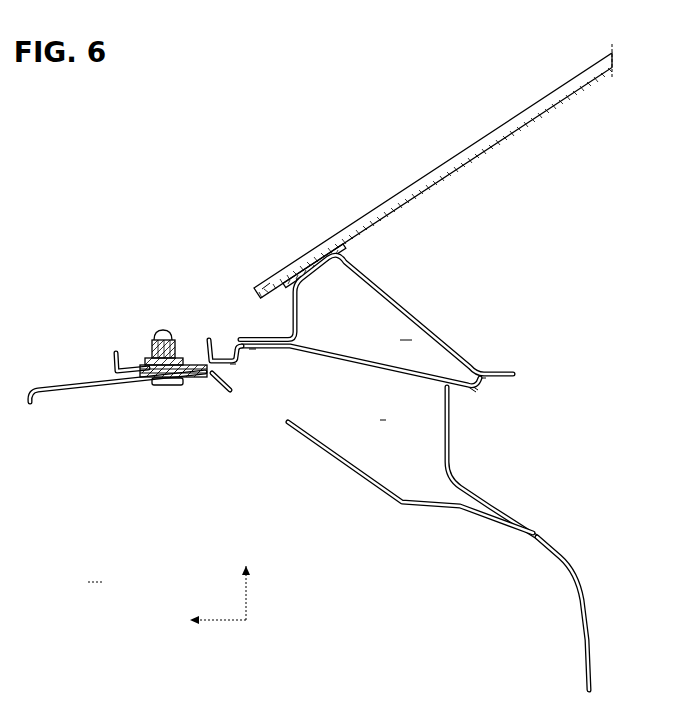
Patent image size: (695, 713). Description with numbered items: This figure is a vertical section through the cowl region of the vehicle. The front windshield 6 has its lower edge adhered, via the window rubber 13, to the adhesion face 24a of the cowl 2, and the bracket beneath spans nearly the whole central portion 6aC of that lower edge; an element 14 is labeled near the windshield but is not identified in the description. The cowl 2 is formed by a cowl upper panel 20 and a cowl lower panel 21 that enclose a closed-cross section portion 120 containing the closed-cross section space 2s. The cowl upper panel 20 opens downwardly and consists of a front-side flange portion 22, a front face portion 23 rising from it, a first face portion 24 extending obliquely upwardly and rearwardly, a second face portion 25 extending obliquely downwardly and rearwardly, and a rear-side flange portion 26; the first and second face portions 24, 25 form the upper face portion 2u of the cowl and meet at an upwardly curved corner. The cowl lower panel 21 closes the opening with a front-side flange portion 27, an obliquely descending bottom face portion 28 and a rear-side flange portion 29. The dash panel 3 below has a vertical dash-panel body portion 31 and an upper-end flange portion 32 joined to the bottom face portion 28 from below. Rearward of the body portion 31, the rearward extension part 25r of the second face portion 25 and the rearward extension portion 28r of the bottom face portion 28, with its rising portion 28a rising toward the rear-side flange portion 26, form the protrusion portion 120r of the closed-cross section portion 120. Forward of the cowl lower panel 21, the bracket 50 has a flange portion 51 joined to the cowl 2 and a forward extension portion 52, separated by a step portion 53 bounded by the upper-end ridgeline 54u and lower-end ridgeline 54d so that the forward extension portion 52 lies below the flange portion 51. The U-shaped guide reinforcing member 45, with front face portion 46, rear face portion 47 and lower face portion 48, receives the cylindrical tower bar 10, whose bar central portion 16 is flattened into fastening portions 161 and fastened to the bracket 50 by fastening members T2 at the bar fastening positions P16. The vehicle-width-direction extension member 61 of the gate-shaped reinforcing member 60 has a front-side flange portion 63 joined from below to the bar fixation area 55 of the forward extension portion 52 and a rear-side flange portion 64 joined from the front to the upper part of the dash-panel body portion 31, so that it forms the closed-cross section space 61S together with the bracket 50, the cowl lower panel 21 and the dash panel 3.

The windshield 14 is at (570, 80).
The front windshield 6 is at (486, 126).
The central portion of the windshield lower edge 6aC is at (368, 188).
The window rubber 13 is at (352, 240).
The front-side flange portion 22 is at (268, 283).
The front face portion 23 is at (298, 278).
The cowl 2 is at (405, 264).
The cowl upper panel 20 is at (421, 330).
The upper face portion 2u is at (450, 330).
The first face portion 24 is at (402, 347).
The adhesion face 24a is at (333, 272).
The second face portion 25 is at (370, 284).
The closed-cross section portion 120 is at (390, 304).
The rearward extension part 25r is at (472, 362).
The rear-side flange portion 26 is at (492, 371).
The rear-side flange portion 29 is at (482, 383).
The rising portion 28a is at (478, 393).
The rearward extension portion 28r is at (478, 395).
The protrusion portion 120r is at (470, 400).
The closed-cross section space 2s is at (398, 361).
The cowl lower panel 21 is at (377, 368).
The bottom face portion 28 is at (362, 368).
The flange portion 51 is at (320, 357).
The closed-cross section space 61S is at (397, 443).
The upper-end flange portion 32 is at (443, 395).
The dash panel 3 is at (578, 641).
The dash-panel body portion 31 is at (584, 598).
The rear-side flange portion 64 is at (520, 538).
The gate-shaped reinforcing member 60 is at (399, 447).
The vehicle-width-direction extension member 61 is at (358, 478).
The front-side flange portion 27 is at (282, 350).
The lower-end ridgeline 54d is at (233, 362).
The upper-end ridgeline 54u is at (252, 352).
The step portion 53 is at (222, 372).
The rear face portion 47 is at (213, 343).
The guide reinforcing member 45 is at (100, 371).
The forward extension portion 52 is at (72, 396).
The bracket 50 is at (40, 388).
The front face portion 46 is at (112, 362).
The tower bar 10 is at (179, 378).
The bar central portion 16 is at (186, 352).
The fastening members T2 is at (160, 330).
The fastening portions 161 is at (182, 352).
The lower face portion 48 is at (150, 366).
The bar fastening positions P16 is at (170, 392).
The front-side flange portion 63 is at (118, 392).
The bar fixation area 55 is at (160, 393).